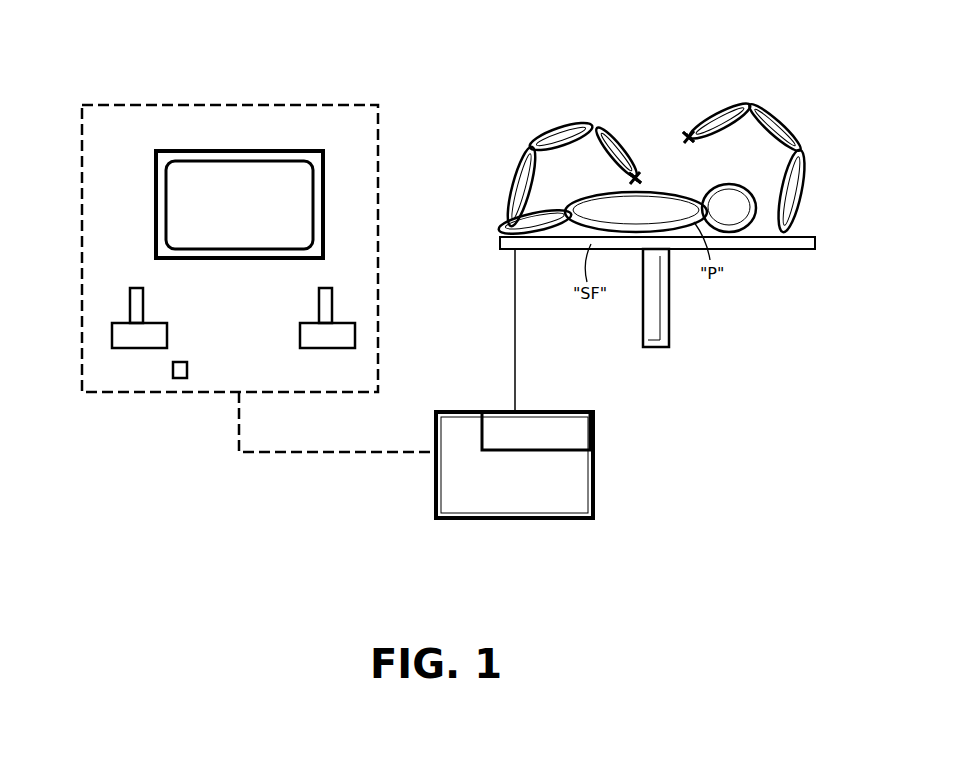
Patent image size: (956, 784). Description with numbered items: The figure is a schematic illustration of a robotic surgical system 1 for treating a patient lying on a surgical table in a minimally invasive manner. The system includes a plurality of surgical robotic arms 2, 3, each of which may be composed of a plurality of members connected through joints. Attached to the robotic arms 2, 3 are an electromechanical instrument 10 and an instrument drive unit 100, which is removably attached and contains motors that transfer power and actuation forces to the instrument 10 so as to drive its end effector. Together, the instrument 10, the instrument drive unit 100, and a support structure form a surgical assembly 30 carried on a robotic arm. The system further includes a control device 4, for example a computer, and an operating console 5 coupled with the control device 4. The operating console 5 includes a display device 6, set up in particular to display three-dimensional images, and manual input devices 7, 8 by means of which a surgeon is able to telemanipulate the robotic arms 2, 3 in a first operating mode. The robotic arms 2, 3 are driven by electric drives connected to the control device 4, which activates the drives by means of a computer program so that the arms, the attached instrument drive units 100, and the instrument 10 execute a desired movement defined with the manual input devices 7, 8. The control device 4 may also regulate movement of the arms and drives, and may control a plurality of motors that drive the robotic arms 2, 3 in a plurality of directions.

The robotic surgical system 1 is at (725, 442).
The surgical robotic arm 2 is at (530, 147).
The surgical robotic arm 3 is at (779, 121).
The control device 4 is at (519, 482).
The operating console 5 is at (167, 72).
The display device 6 is at (250, 211).
The manual input device 7 is at (122, 337).
The manual input device 8 is at (325, 335).
The electromechanical instrument 10 is at (640, 172).
The surgical assembly 30 is at (628, 178).
The instrument drive unit 100 is at (636, 172).